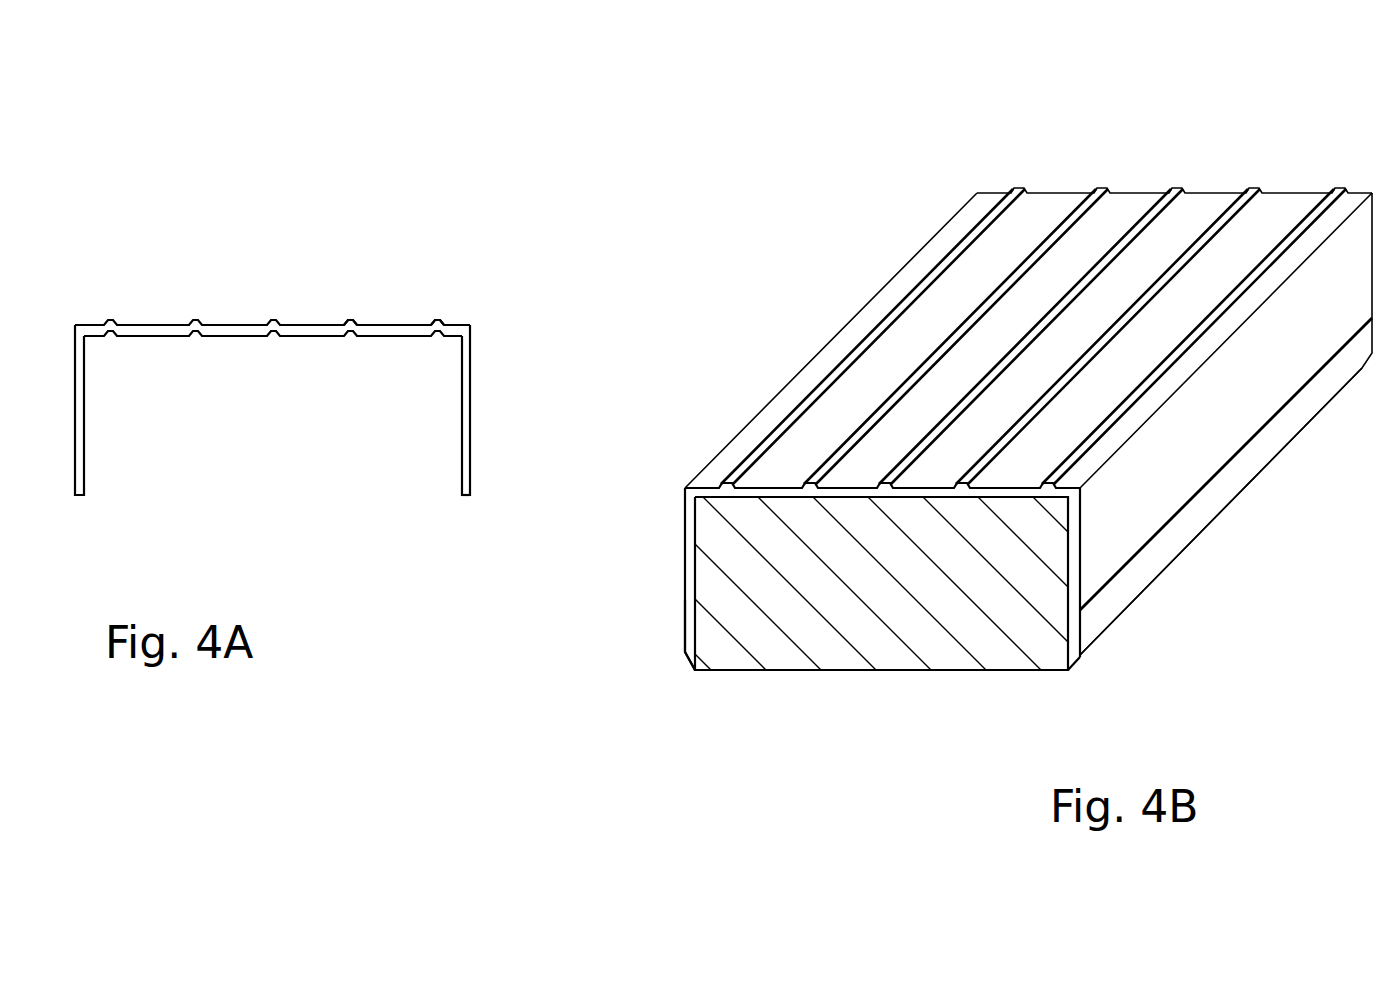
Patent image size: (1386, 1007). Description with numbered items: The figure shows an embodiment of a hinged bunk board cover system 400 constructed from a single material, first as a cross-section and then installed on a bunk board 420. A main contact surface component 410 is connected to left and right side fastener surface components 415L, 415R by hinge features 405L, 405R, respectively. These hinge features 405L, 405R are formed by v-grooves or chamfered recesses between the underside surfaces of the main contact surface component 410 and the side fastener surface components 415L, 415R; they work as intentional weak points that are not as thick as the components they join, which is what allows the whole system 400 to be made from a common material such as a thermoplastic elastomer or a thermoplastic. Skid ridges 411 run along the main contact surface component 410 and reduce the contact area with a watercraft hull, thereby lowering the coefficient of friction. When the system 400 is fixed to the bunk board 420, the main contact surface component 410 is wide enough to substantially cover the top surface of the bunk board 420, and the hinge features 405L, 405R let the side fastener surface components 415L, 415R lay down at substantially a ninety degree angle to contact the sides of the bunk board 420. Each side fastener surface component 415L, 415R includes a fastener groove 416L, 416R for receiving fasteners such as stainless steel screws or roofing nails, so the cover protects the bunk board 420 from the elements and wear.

In FIG. 4A, the hinged bunk board cover system 400 is at (138, 73).
In FIG. 4A, the left hinge feature 405L is at (86, 338).
In FIG. 4A, the right hinge feature 405R is at (460, 338).
In FIG. 4A, the main contact surface component 410 is at (160, 324).
In FIG. 4B, the main contact surface component 410 is at (1107, 213).
In FIG. 4A, the skid ridge 411 is at (343, 324).
In FIG. 4B, the skid ridge 411 is at (1253, 213).
In FIG. 4A, the left side fastener surface component 415L is at (86, 392).
In FIG. 4B, the left side fastener surface component 415L is at (683, 545).
In FIG. 4A, the right side fastener surface component 415R is at (473, 398).
In FIG. 4B, the right side fastener surface component 415R is at (1228, 380).
In FIG. 4B, the left fastener groove 416L is at (683, 612).
In FIG. 4A, the right fastener groove 416R is at (473, 455).
In FIG. 4B, the right fastener groove 416R is at (1133, 566).
In FIG. 4B, the bunk board 420 is at (905, 665).